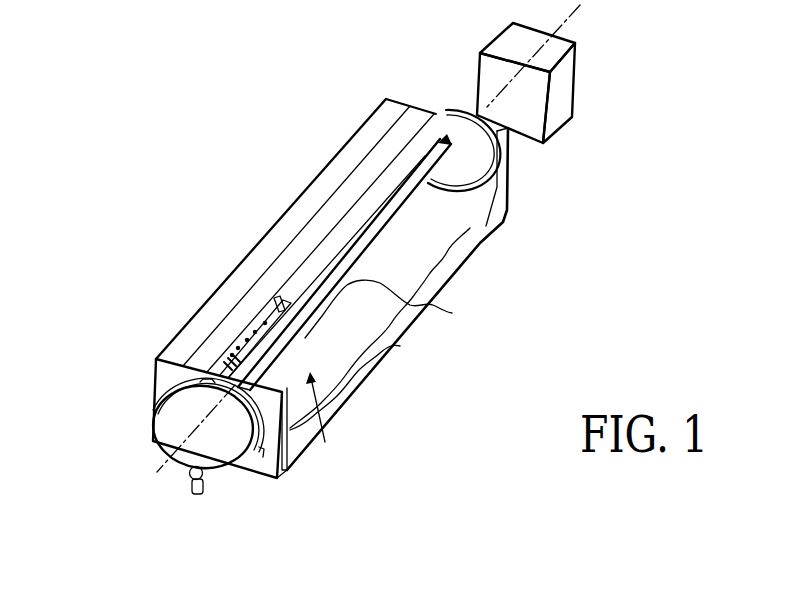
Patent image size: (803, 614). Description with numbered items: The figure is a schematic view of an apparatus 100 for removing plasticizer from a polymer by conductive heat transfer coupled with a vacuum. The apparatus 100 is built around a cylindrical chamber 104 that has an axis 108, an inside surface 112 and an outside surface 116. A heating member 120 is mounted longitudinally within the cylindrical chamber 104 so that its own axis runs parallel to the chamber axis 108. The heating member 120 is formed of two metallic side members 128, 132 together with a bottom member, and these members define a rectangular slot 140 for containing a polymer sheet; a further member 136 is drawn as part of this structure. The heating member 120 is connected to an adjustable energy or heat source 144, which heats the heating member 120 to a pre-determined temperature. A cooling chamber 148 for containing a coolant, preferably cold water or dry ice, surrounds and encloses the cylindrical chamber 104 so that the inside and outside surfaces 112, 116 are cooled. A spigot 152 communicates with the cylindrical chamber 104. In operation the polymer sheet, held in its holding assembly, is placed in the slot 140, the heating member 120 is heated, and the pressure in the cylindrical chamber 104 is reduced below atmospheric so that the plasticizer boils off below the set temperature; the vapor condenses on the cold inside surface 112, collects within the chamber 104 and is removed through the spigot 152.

The apparatus 100 is at (132, 166).
The cylindrical chamber 104 is at (387, 137).
The axis 108 is at (141, 490).
The inside surface 112 is at (480, 240).
The outside surface 116 is at (360, 178).
The heating member 120 is at (356, 269).
The side member 128 is at (452, 313).
The side member 132 is at (438, 103).
The light ray 136 is at (400, 346).
The rectangular slot 140 is at (217, 333).
The heat source 144 is at (563, 43).
The cooling chamber 148 is at (275, 236).
The spigot 152 is at (204, 484).